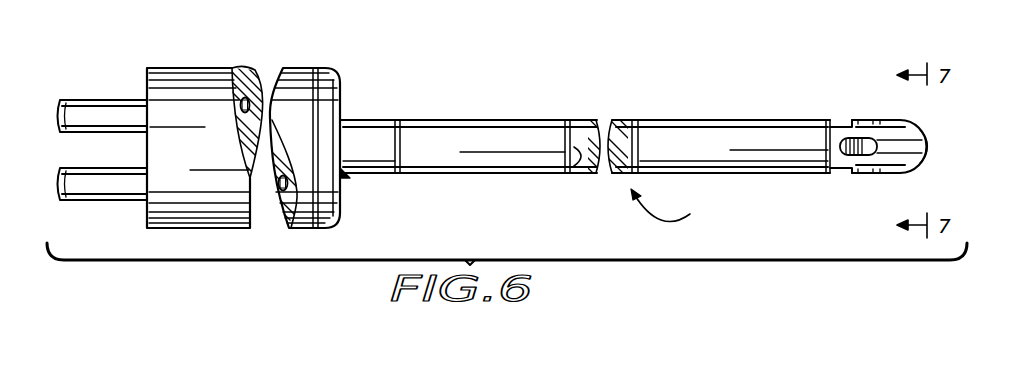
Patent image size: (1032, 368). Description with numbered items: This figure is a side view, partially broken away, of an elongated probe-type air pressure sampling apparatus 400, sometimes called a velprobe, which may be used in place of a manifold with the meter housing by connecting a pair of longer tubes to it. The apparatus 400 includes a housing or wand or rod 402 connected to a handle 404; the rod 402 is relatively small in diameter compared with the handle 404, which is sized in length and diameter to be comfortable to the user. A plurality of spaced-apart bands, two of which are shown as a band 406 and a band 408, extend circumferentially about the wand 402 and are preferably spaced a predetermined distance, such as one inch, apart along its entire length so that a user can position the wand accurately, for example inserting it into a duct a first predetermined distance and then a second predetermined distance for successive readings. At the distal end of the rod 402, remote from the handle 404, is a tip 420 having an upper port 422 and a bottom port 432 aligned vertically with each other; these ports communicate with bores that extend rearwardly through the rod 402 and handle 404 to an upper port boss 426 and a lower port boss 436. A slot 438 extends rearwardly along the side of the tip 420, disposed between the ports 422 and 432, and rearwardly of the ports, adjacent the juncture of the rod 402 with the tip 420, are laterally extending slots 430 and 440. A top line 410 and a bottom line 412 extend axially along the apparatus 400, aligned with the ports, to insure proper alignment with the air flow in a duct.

The probe-type air pressure sampling apparatus 400 is at (674, 205).
The housing or wand or rod 402 is at (552, 130).
The handle 404 is at (240, 73).
The band 406 is at (637, 152).
The band 408 is at (583, 150).
The top line 410 is at (505, 103).
The bottom line 412 is at (443, 173).
The tip 420 is at (935, 114).
The upper port 422 is at (900, 101).
The upper port boss 426 is at (112, 69).
The laterally extending slot 430 is at (840, 122).
The bottom port 432 is at (880, 174).
The lower port boss 436 is at (112, 200).
The slot 438 is at (932, 150).
The laterally extending slot 440 is at (838, 175).